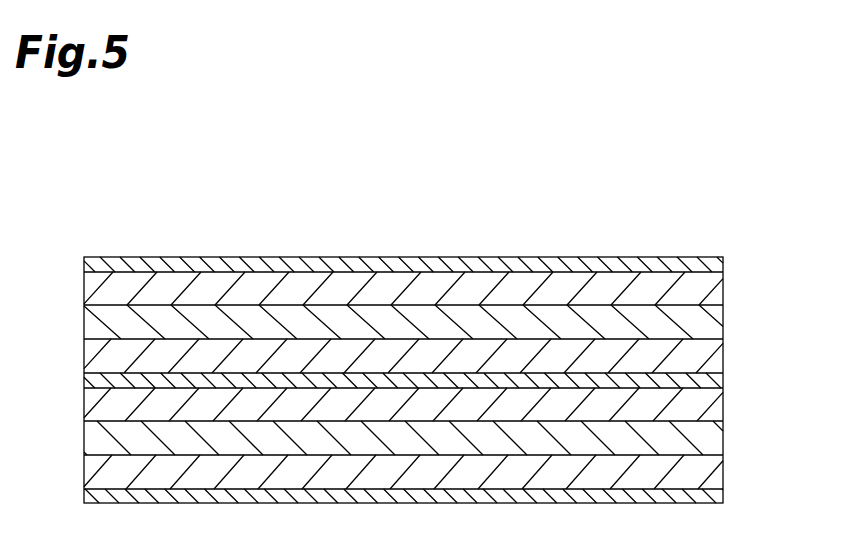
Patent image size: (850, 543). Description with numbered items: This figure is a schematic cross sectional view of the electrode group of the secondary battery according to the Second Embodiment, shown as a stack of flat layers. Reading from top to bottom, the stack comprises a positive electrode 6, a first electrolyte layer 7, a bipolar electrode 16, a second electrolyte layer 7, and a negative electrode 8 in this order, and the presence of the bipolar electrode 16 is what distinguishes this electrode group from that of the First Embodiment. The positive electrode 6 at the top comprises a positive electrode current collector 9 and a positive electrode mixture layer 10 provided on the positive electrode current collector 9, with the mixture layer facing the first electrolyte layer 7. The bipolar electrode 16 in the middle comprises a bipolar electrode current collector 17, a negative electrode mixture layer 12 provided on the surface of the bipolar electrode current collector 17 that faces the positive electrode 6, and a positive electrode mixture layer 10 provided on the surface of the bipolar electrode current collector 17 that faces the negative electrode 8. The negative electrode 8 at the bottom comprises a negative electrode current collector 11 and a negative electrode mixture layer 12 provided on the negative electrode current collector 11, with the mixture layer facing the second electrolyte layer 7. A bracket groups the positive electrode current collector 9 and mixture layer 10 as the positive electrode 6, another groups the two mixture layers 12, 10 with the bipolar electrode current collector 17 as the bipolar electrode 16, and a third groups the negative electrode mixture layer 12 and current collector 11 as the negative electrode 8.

The positive electrode 6 is at (790, 250).
The positive electrode current collector 9 is at (723, 258).
The positive electrode mixture layer 10 is at (723, 292).
The electrolyte layer 7 is at (723, 325).
The negative electrode mixture layer 12 is at (723, 355).
The bipolar electrode 16 is at (790, 345).
The bipolar electrode current collector 17 is at (723, 380).
The negative electrode 8 is at (790, 465).
The negative electrode current collector 11 is at (723, 497).